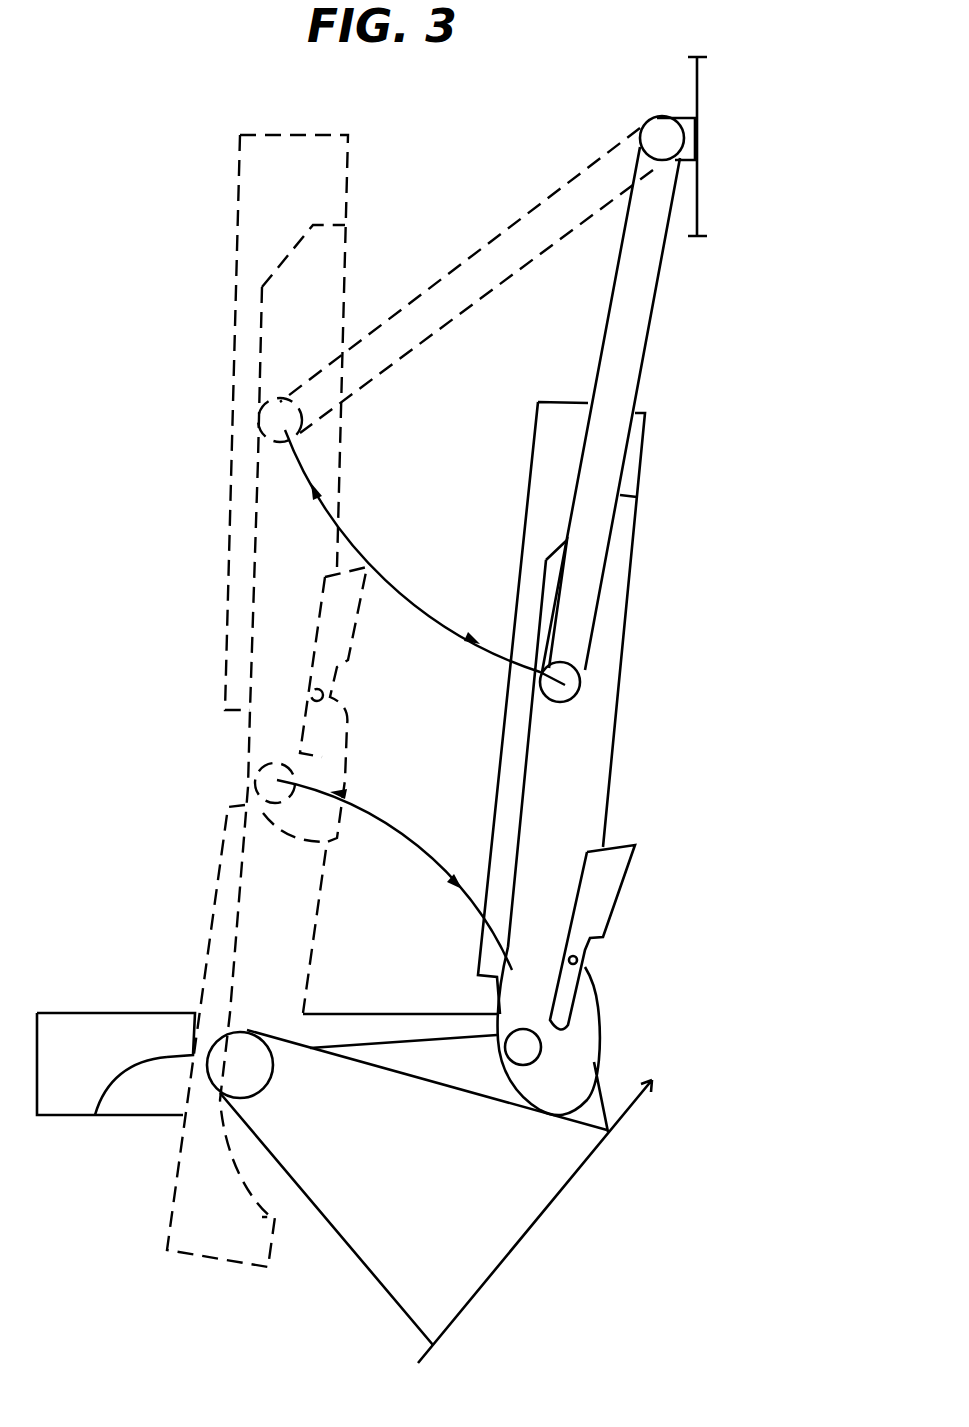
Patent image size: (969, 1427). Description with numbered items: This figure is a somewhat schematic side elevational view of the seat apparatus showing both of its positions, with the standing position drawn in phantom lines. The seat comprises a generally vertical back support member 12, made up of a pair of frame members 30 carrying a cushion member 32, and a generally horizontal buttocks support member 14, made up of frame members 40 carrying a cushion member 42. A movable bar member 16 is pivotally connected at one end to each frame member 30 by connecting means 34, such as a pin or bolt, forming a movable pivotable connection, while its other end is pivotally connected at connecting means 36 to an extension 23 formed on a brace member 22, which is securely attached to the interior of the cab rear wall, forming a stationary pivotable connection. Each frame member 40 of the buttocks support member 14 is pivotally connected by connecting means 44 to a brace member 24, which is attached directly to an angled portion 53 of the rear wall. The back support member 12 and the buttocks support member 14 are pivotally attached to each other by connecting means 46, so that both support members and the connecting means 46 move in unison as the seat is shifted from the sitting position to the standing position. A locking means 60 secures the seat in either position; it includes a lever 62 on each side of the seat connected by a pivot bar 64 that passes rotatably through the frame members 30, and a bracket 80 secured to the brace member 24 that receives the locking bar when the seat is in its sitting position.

The back support member 12 is at (617, 722).
The buttocks support member 14 is at (116, 1065).
The bar member 16 is at (650, 335).
The brace member 22 is at (697, 210).
The extension 23 is at (688, 127).
The brace member 24 is at (477, 1245).
The frame member 30 is at (625, 542).
The cushion member 32 is at (632, 468).
The connecting means 34 is at (583, 672).
The connecting means 36 is at (663, 145).
The frame member 40 is at (130, 1102).
The cushion member 42 is at (67, 1093).
The connecting means 44 is at (240, 1063).
The connecting means 46 is at (528, 1050).
The angled portion 53 is at (573, 1182).
The locking means 60 is at (620, 935).
The lever 62 is at (605, 872).
The pivot bar 64 is at (577, 960).
The bracket 80 is at (592, 1108).